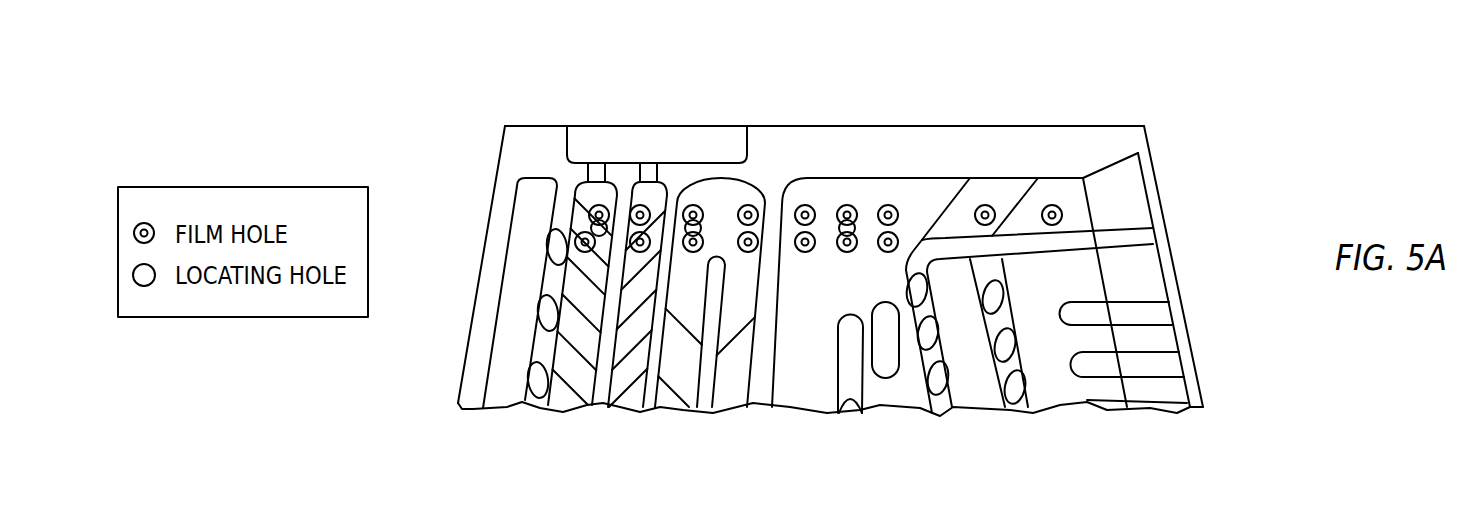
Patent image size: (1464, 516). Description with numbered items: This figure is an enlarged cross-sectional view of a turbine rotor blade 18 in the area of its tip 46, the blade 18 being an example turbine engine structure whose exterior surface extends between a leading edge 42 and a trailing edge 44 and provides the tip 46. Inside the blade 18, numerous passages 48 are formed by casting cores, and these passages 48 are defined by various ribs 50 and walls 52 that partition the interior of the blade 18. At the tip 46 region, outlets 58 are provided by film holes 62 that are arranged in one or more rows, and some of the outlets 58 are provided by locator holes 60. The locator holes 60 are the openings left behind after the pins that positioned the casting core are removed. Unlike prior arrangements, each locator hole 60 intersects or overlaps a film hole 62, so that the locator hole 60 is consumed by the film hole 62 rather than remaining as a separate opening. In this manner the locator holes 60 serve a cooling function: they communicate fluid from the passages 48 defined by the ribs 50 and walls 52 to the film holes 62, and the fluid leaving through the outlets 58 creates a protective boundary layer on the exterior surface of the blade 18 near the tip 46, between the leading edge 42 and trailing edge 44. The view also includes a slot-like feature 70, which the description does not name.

The turbine rotor blade 18 is at (1206, 113).
The leading edge 42 is at (489, 217).
The trailing edge 44 is at (1168, 222).
The tip 46 is at (944, 126).
The passages 48 is at (566, 395).
The ribs 50 is at (758, 392).
The walls 52 is at (466, 374).
The outlets 58 is at (1158, 330).
The locator holes 60 is at (592, 225).
The film holes 62 is at (600, 205).
The elongated slot 70 is at (884, 360).